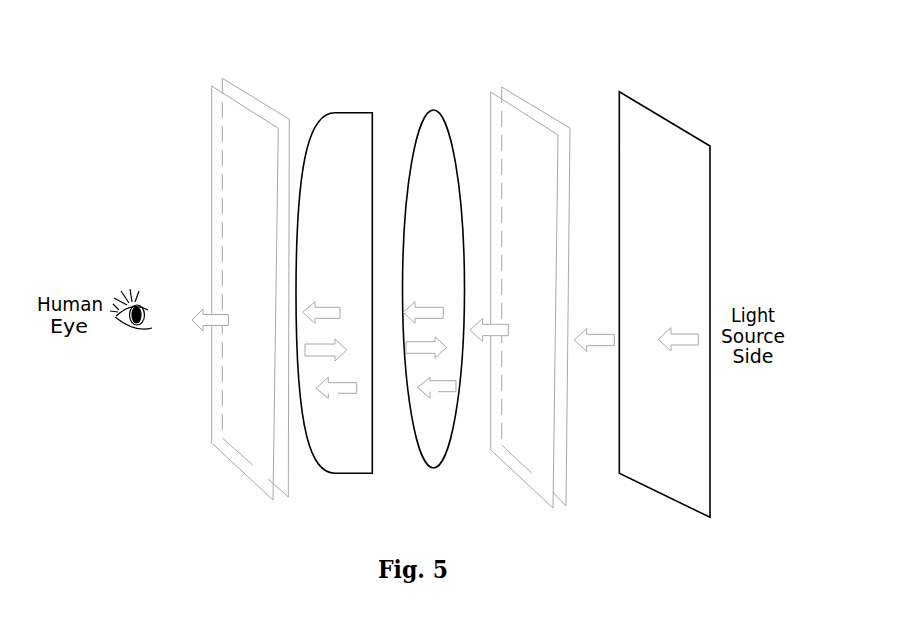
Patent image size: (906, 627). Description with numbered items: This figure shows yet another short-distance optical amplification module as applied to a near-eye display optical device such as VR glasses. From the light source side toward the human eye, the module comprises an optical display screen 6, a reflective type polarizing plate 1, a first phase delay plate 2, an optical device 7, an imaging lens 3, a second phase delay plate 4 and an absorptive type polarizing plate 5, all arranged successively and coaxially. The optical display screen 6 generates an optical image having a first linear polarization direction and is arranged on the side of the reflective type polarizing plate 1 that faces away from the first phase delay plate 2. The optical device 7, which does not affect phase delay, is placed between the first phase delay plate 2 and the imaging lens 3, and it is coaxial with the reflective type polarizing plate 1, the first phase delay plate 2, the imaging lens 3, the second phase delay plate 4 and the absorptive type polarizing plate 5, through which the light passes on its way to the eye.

The reflective type polarizing plate 1 is at (527, 100).
The first phase delay plate 2 is at (490, 92).
The imaging lens 3 is at (347, 112).
The second phase delay plate 4 is at (264, 101).
The absorptive type polarizing plate 5 is at (212, 86).
The optical display screen 6 is at (665, 117).
The optical device 7 is at (433, 110).